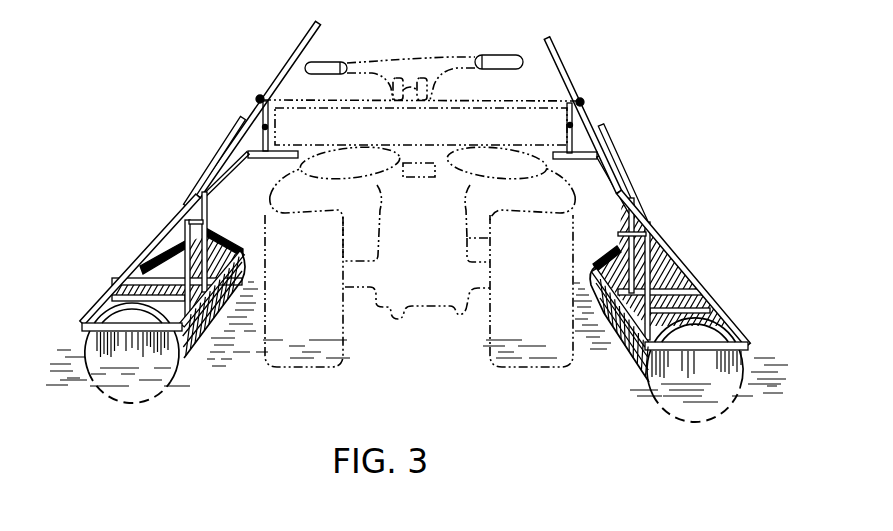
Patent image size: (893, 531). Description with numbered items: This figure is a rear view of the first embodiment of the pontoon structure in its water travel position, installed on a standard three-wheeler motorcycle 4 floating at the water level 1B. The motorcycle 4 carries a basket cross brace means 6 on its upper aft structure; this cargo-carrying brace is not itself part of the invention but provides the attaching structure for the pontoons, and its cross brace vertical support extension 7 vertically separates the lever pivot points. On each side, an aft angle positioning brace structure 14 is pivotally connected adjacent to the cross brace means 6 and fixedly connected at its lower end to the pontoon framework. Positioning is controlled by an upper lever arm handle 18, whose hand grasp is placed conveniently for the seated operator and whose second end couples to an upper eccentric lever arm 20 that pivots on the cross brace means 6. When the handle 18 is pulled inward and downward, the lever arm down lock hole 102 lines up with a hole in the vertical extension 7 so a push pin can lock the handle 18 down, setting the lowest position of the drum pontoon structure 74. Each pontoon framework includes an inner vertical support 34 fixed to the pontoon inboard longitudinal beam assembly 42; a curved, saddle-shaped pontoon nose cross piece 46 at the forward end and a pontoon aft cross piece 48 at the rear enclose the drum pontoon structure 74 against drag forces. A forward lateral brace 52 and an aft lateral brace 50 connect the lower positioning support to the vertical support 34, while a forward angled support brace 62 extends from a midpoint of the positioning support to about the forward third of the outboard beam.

The three-wheeler motorcycle 4 is at (415, 309).
The basket cross brace means 6 is at (388, 108).
The cross brace vertical support extension 7 is at (277, 117).
The aft angle positioning brace structure 14 is at (166, 222).
The upper lever arm handle 18 is at (285, 51).
The upper eccentric lever arm 20 is at (230, 138).
The inner vertical support 34 is at (207, 200).
The pontoon inboard longitudinal beam assembly 42 is at (214, 337).
The pontoon nose cross piece 46 is at (232, 250).
The pontoon aft cross piece 48 is at (742, 338).
The aft lateral brace 50 is at (116, 300).
The forward lateral brace 52 is at (143, 275).
The forward angled support brace 62 is at (177, 214).
The drum pontoon structure 74 is at (89, 353).
The lever arm down lock hole 102 is at (258, 96).
The water level 1B is at (219, 370).